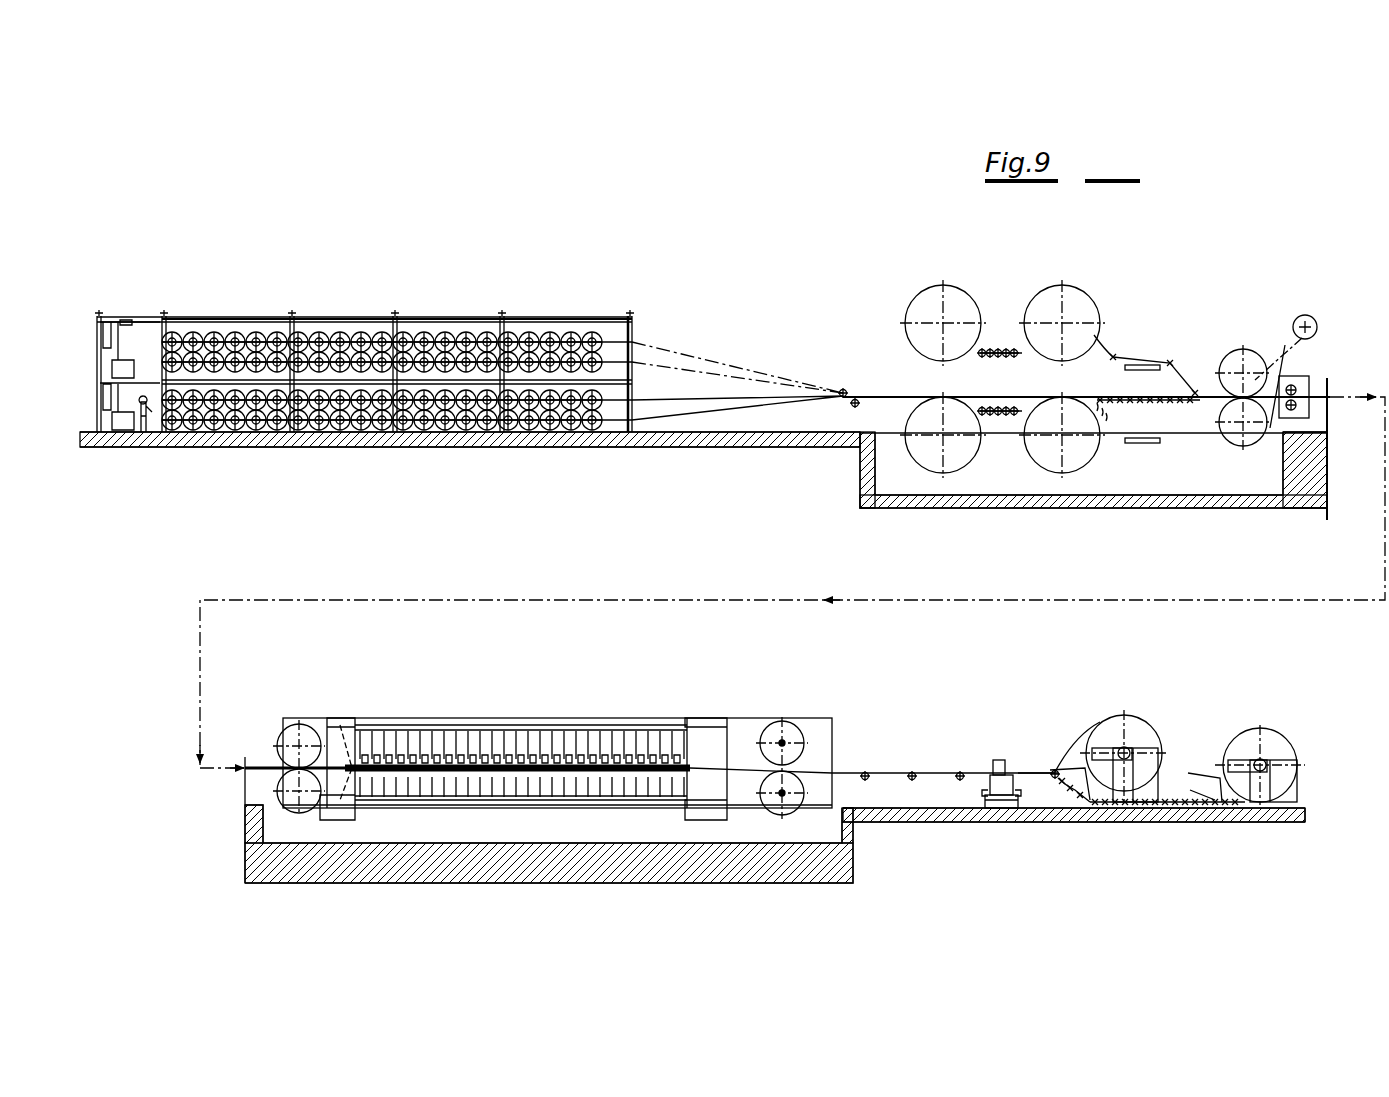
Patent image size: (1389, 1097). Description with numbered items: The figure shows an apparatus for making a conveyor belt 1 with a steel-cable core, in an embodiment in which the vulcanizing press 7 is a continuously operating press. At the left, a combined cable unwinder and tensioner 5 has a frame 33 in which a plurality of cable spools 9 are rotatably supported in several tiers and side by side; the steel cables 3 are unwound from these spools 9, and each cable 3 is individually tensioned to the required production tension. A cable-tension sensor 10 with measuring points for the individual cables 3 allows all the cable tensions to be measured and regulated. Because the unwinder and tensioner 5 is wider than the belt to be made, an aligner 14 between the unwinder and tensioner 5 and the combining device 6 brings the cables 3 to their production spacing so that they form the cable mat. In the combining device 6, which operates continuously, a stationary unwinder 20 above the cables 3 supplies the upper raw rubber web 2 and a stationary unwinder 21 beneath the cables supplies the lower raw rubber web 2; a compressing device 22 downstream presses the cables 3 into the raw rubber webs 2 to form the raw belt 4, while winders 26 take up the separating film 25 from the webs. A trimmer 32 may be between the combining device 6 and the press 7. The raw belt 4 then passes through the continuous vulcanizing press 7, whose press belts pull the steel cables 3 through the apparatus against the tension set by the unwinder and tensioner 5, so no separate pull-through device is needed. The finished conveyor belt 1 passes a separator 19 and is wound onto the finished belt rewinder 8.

The conveyor belt 1 is at (1028, 770).
The raw rubber webs 2 is at (1113, 357).
The steel cables 3 is at (742, 392).
The raw belt 4 is at (258, 765).
The combined cable unwinder and tensioner 5 is at (445, 288).
The combining device 6 is at (1151, 292).
The vulcanizing press 7 is at (630, 705).
The finished belt rewinder 8 is at (1238, 722).
The cable spools 9 is at (356, 420).
The cable-tension sensor 10 is at (642, 326).
The aligner 14 is at (846, 388).
The separator 19 is at (1000, 754).
The stationary unwinder for upper raw rubber web 20 is at (1038, 283).
The stationary unwinder for bottom raw rubber web 21 is at (968, 476).
The compressing device 22 is at (1247, 345).
The separating film 25 is at (1282, 352).
The winders for separating film 26 is at (1306, 312).
The trimmer 32 is at (1318, 412).
The frame 33 is at (540, 322).